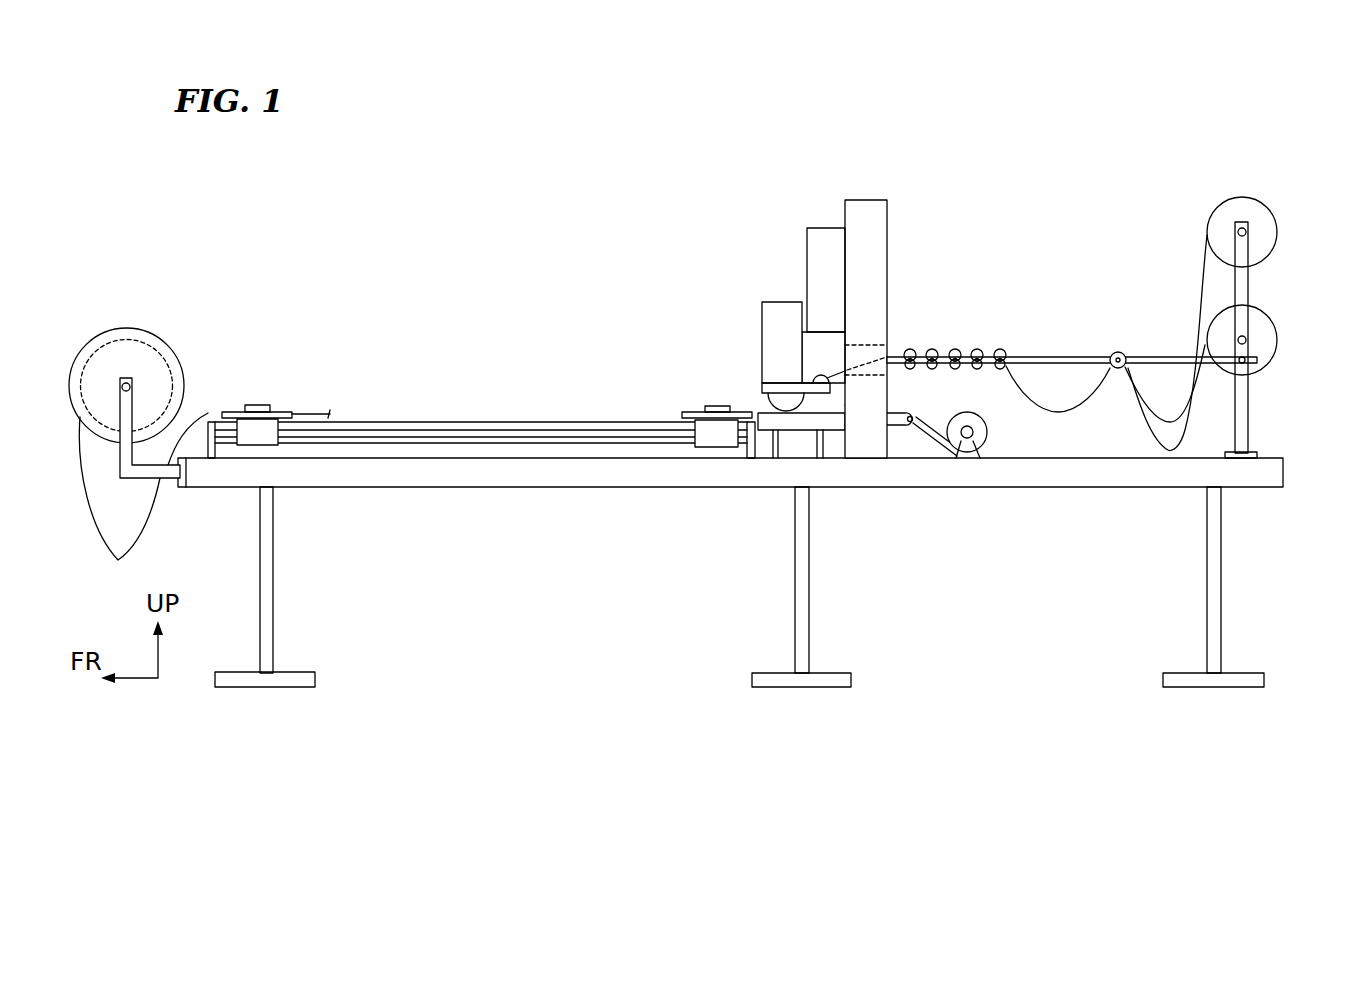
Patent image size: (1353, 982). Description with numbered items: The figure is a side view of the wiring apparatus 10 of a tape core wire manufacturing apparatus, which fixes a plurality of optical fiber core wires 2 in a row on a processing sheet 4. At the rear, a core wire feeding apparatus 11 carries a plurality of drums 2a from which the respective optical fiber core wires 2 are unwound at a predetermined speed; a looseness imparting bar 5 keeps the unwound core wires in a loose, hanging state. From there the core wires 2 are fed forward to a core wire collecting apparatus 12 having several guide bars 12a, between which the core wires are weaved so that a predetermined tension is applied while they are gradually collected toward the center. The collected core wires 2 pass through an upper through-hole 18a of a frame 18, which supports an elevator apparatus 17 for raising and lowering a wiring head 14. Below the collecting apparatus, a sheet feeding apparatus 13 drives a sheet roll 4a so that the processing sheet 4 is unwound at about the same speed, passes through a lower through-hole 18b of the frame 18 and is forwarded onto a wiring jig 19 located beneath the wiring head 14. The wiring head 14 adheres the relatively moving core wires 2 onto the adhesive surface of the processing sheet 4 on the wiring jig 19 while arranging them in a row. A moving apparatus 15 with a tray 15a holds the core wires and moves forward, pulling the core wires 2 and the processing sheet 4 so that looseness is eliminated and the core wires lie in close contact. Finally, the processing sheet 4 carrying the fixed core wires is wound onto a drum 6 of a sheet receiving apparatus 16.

The wiring apparatus 10 is at (1084, 137).
The optical fiber core wires 2 is at (1197, 343).
The drums 2a is at (1277, 232).
The processing sheet 4 is at (937, 434).
The sheet roll 4a is at (972, 424).
The looseness imparting bar 5 is at (1116, 352).
The drum 6 is at (128, 328).
The core wire feeding apparatus 11 is at (1208, 213).
The core wire collecting apparatus 12 is at (1004, 353).
The guide bars 12a is at (1000, 349).
The sheet feeding apparatus 13 is at (989, 435).
The wiring head 14 is at (755, 378).
The moving apparatus 15 is at (634, 411).
The tray 15a is at (290, 411).
The sheet receiving apparatus 16 is at (164, 336).
The elevator apparatus 17 is at (807, 258).
The frame 18 is at (888, 235).
The upper through-hole 18a is at (888, 350).
The lower through-hole 18b is at (889, 413).
The wiring jig 19 is at (825, 431).